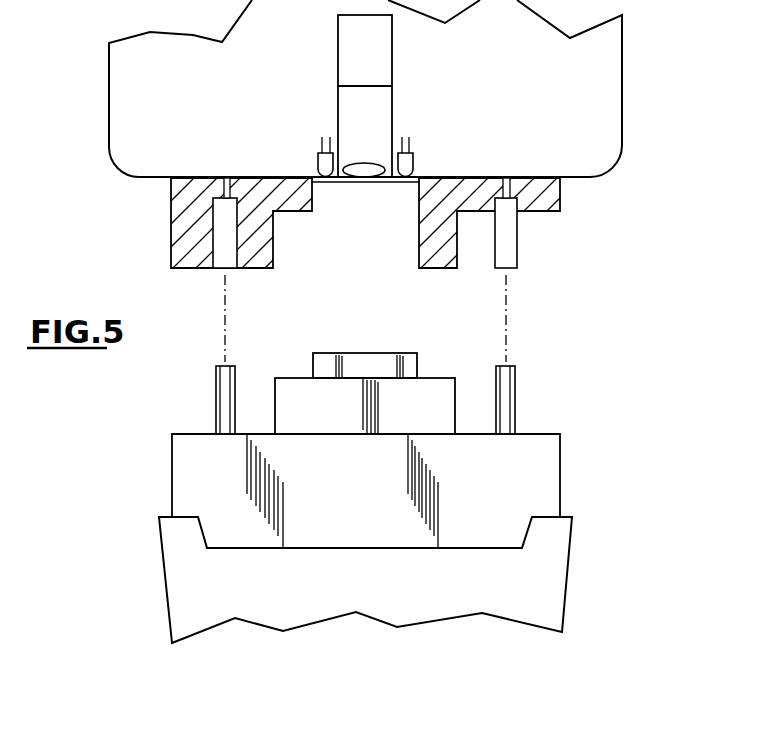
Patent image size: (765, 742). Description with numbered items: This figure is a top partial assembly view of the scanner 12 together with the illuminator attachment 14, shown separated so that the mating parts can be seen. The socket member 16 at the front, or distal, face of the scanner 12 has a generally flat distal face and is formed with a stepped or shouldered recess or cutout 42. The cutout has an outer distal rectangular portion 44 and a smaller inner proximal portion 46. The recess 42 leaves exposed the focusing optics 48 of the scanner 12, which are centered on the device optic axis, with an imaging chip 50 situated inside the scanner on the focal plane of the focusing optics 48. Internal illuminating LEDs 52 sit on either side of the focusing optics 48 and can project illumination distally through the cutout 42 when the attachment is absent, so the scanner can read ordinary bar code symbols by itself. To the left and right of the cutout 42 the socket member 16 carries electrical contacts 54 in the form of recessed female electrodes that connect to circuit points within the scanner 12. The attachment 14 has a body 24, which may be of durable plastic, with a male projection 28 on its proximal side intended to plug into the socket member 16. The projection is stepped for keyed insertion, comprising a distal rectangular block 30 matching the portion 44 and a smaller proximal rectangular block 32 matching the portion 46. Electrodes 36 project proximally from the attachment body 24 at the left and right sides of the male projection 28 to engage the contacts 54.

The scanner 12 is at (622, 72).
The illuminator attachment 14 is at (628, 587).
The socket member 16 is at (171, 217).
The attachment body 24 is at (560, 468).
The male projection 28 is at (465, 378).
The distal rectangular block 30 is at (303, 420).
The proximal rectangular block 32 is at (419, 352).
The electrodes 36 is at (216, 397).
The recess or cutout 42 is at (304, 298).
The distal rectangular portion 44 is at (457, 246).
The proximal portion 46 is at (419, 201).
The focusing optics 48 is at (365, 163).
The imaging chip 50 is at (392, 72).
The internal illuminating LEDs 52 is at (318, 160).
The electrical contacts 54 is at (222, 270).